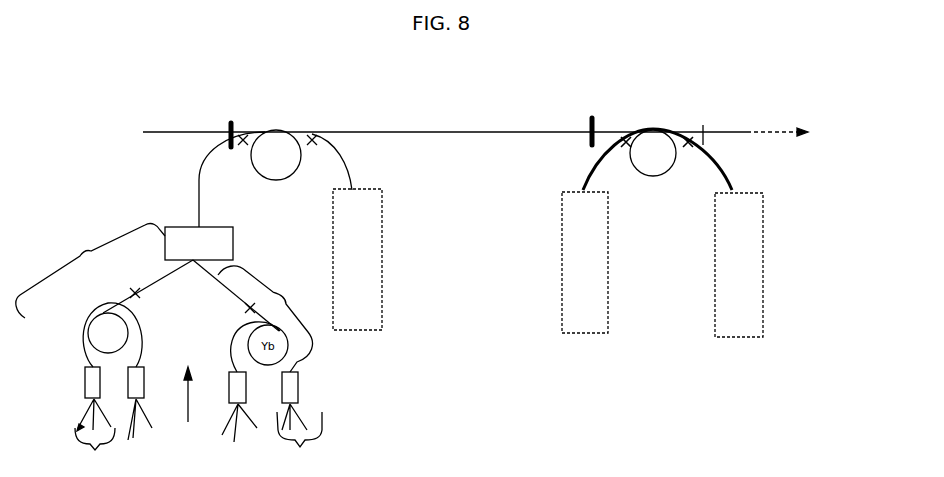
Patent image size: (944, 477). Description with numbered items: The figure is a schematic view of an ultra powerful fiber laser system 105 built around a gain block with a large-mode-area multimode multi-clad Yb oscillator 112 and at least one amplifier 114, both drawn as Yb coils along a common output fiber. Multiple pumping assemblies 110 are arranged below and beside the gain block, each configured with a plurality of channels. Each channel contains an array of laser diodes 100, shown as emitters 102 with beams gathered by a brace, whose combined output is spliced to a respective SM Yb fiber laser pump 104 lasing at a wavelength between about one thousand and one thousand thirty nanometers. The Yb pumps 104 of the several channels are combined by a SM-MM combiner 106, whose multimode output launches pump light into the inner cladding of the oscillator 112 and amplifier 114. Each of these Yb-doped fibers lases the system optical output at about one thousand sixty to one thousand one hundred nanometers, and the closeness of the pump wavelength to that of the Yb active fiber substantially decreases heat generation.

The laser diodes 100 is at (198, 438).
The pump diodes 102 is at (154, 385).
The SM Yb fiber laser pump 104 is at (123, 313).
The fiber laser system 105 is at (476, 93).
The SM-MM combiner 106 is at (177, 230).
The pumping assemblies 110 is at (389, 318).
The LMA MM&MC Yb oscillator 112 is at (275, 167).
The amplifier 114 is at (657, 148).